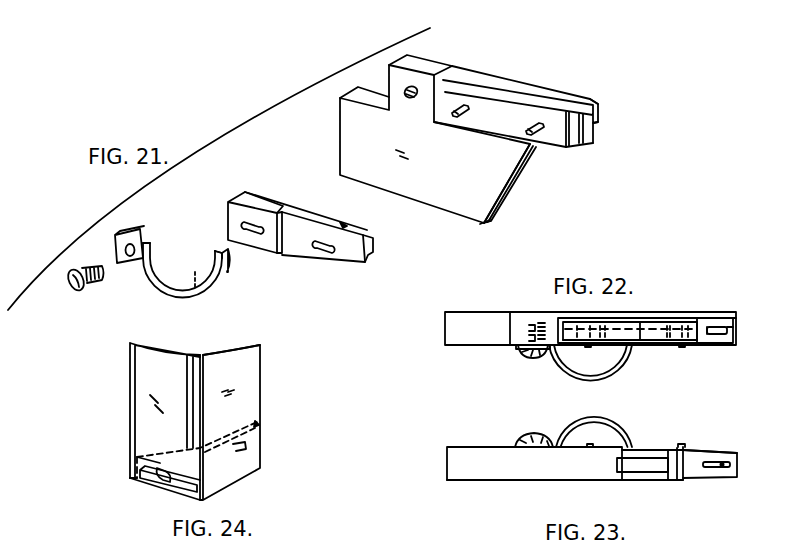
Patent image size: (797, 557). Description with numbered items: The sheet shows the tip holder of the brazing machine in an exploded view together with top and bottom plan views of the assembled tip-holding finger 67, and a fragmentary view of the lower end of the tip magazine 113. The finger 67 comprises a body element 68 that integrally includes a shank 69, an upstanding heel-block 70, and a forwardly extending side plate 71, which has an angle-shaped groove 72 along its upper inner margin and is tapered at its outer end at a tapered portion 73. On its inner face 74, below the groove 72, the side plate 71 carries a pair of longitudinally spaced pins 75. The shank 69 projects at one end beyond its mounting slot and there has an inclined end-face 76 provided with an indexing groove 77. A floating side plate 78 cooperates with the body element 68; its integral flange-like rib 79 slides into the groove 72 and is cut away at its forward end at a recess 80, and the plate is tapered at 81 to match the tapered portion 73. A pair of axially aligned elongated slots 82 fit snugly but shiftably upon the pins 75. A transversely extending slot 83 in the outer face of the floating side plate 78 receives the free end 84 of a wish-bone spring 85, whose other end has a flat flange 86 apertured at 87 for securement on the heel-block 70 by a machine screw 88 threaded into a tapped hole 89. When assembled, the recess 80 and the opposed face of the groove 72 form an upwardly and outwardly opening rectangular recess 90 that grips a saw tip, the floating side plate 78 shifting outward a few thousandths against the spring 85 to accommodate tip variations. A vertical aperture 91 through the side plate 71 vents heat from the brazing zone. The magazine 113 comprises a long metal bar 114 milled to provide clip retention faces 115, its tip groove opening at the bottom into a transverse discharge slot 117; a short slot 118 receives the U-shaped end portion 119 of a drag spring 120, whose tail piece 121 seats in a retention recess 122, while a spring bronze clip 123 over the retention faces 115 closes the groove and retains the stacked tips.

In FIG. 22, the tip-holding finger 67 is at (716, 305).
In FIG. 23, the tip-holding finger 67 is at (716, 438).
In FIG. 21, the body element 68 is at (420, 192).
In FIG. 22, the body element 68 is at (463, 339).
In FIG. 23, the body element 68 is at (449, 465).
In FIG. 21, the shank 69 is at (502, 177).
In FIG. 23, the shank 69 is at (574, 480).
In FIG. 21, the heel-block 70 is at (425, 80).
In FIG. 22, the heel-block 70 is at (509, 345).
In FIG. 21, the side plate 71 is at (540, 86).
In FIG. 22, the side plate 71 is at (686, 318).
In FIG. 21, the angle-shaped groove 72 is at (598, 107).
In FIG. 22, the angle-shaped groove 72 is at (736, 320).
In FIG. 21, the tapered portion 73 is at (584, 128).
In FIG. 23, the tapered portion 73 is at (714, 478).
In FIG. 21, the inner face 74 is at (561, 132).
In FIG. 21, the pins 75 is at (526, 131).
In FIG. 22, the pins 75 is at (588, 346).
In FIG. 23, the pins 75 is at (680, 444).
In FIG. 21, the inclined end-face 76 is at (487, 224).
In FIG. 23, the inclined end-face 76 is at (668, 476).
In FIG. 21, the indexing groove 77 is at (513, 197).
In FIG. 23, the indexing groove 77 is at (650, 466).
In FIG. 21, the floating side plate 78 is at (297, 258).
In FIG. 22, the floating side plate 78 is at (636, 343).
In FIG. 21, the flange-like rib 79 is at (317, 213).
In FIG. 21, the cut-away recess 80 is at (345, 225).
In FIG. 22, the cut-away recess 80 is at (735, 343).
In FIG. 21, the tapered forward end 81 is at (352, 263).
In FIG. 23, the tapered forward end 81 is at (722, 453).
In FIG. 21, the elongated slots 82 is at (255, 233).
In FIG. 22, the elongated slots 82 is at (670, 346).
In FIG. 21, the transversely extending slot 83 is at (282, 223).
In FIG. 22, the transversely extending slot 83 is at (645, 335).
In FIG. 21, the free end 84 is at (228, 282).
In FIG. 21, the wish-bone spring 85 is at (182, 293).
In FIG. 22, the wish-bone spring 85 is at (612, 368).
In FIG. 23, the wish-bone spring 85 is at (585, 418).
In FIG. 21, the flat flange 86 is at (133, 240).
In FIG. 22, the flat flange 86 is at (545, 350).
In FIG. 21, the aperture 87 is at (131, 256).
In FIG. 21, the machine screw 88 is at (72, 288).
In FIG. 22, the machine screw 88 is at (526, 357).
In FIG. 23, the machine screw 88 is at (525, 434).
In FIG. 21, the tapped hole 89 is at (408, 96).
In FIG. 22, the tapped hole 89 is at (528, 324).
In FIG. 22, the rectangular recess 90 is at (728, 331).
In FIG. 21, the vertical aperture 91 is at (578, 134).
In FIG. 22, the vertical aperture 91 is at (713, 335).
In FIG. 23, the vertical aperture 91 is at (731, 464).
In FIG. 24, the tip magazine 113 is at (257, 342).
In FIG. 24, the metal bar 114 is at (257, 372).
In FIG. 24, the clip retention faces 115 is at (135, 392).
In FIG. 24, the transverse discharge slot 117 is at (131, 480).
In FIG. 24, the short slot 118 is at (175, 484).
In FIG. 24, the U-shaped end portion 119 is at (157, 478).
In FIG. 24, the drag spring 120 is at (228, 472).
In FIG. 24, the tail piece 121 is at (248, 448).
In FIG. 24, the retention recess 122 is at (257, 424).
In FIG. 24, the spring bronze clip 123 is at (133, 424).